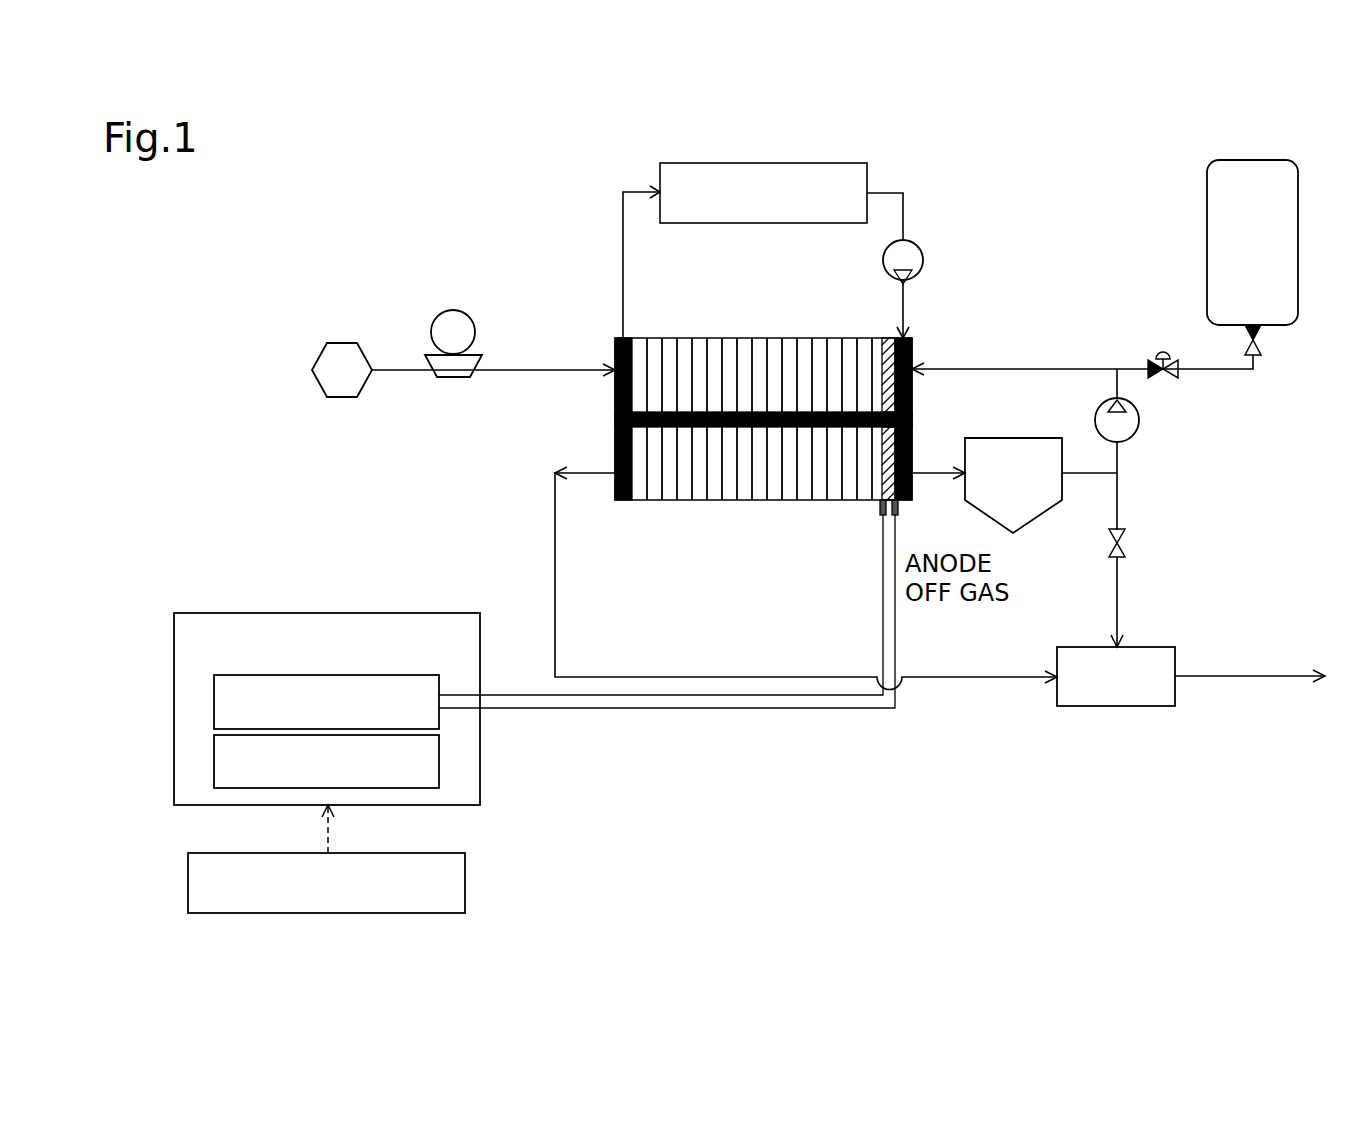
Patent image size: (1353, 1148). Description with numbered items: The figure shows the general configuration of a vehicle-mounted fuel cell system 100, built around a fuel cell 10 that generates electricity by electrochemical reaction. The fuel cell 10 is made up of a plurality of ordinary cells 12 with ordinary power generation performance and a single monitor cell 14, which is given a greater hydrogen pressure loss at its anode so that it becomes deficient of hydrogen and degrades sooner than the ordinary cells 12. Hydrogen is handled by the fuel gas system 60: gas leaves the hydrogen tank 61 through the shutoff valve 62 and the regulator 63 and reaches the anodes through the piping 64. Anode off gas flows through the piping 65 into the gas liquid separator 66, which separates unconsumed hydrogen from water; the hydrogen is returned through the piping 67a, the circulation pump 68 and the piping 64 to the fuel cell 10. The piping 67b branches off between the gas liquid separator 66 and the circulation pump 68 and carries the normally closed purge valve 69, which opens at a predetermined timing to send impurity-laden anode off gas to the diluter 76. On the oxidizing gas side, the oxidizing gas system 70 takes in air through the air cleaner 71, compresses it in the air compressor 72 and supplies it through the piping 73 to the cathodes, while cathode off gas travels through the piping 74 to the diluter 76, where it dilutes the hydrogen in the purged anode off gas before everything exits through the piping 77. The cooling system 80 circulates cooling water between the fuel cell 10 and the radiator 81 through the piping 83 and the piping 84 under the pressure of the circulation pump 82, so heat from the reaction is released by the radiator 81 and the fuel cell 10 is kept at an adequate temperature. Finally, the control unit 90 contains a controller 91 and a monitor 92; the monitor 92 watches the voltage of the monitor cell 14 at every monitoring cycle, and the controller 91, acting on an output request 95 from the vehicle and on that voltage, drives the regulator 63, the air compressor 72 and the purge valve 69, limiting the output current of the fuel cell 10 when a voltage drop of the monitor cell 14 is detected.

The fuel cell system 100 is at (1043, 137).
The fuel cell 10 is at (763, 430).
The ordinary cells 12 is at (882, 336).
The monitor cell 14 is at (891, 337).
The fuel gas system 60 is at (1222, 425).
The hydrogen tank 61 is at (1253, 160).
The shutoff valve 62 is at (1260, 342).
The regulator 63 is at (1163, 352).
The piping 64 is at (1078, 369).
The piping 65 is at (943, 466).
The gas liquid separator 66 is at (1016, 438).
The piping 67a is at (1117, 456).
The piping 67b is at (1117, 498).
The circulation pump 68 is at (1139, 420).
The purge valve 69 is at (1125, 543).
The oxidizing gas system 70 is at (428, 416).
The air cleaner 71 is at (346, 343).
The air compressor 72 is at (453, 378).
The piping 73 is at (504, 370).
The piping 74 is at (736, 677).
The diluter 76 is at (1115, 707).
The piping 77 is at (1275, 676).
The cooling system 80 is at (594, 188).
The radiator 81 is at (867, 177).
The circulation pump 82 is at (922, 265).
The piping 83 is at (623, 228).
The piping 84 is at (905, 212).
The control unit 90 is at (497, 660).
The controller 91 is at (214, 759).
The monitor 92 is at (214, 700).
The output request 95 is at (465, 880).